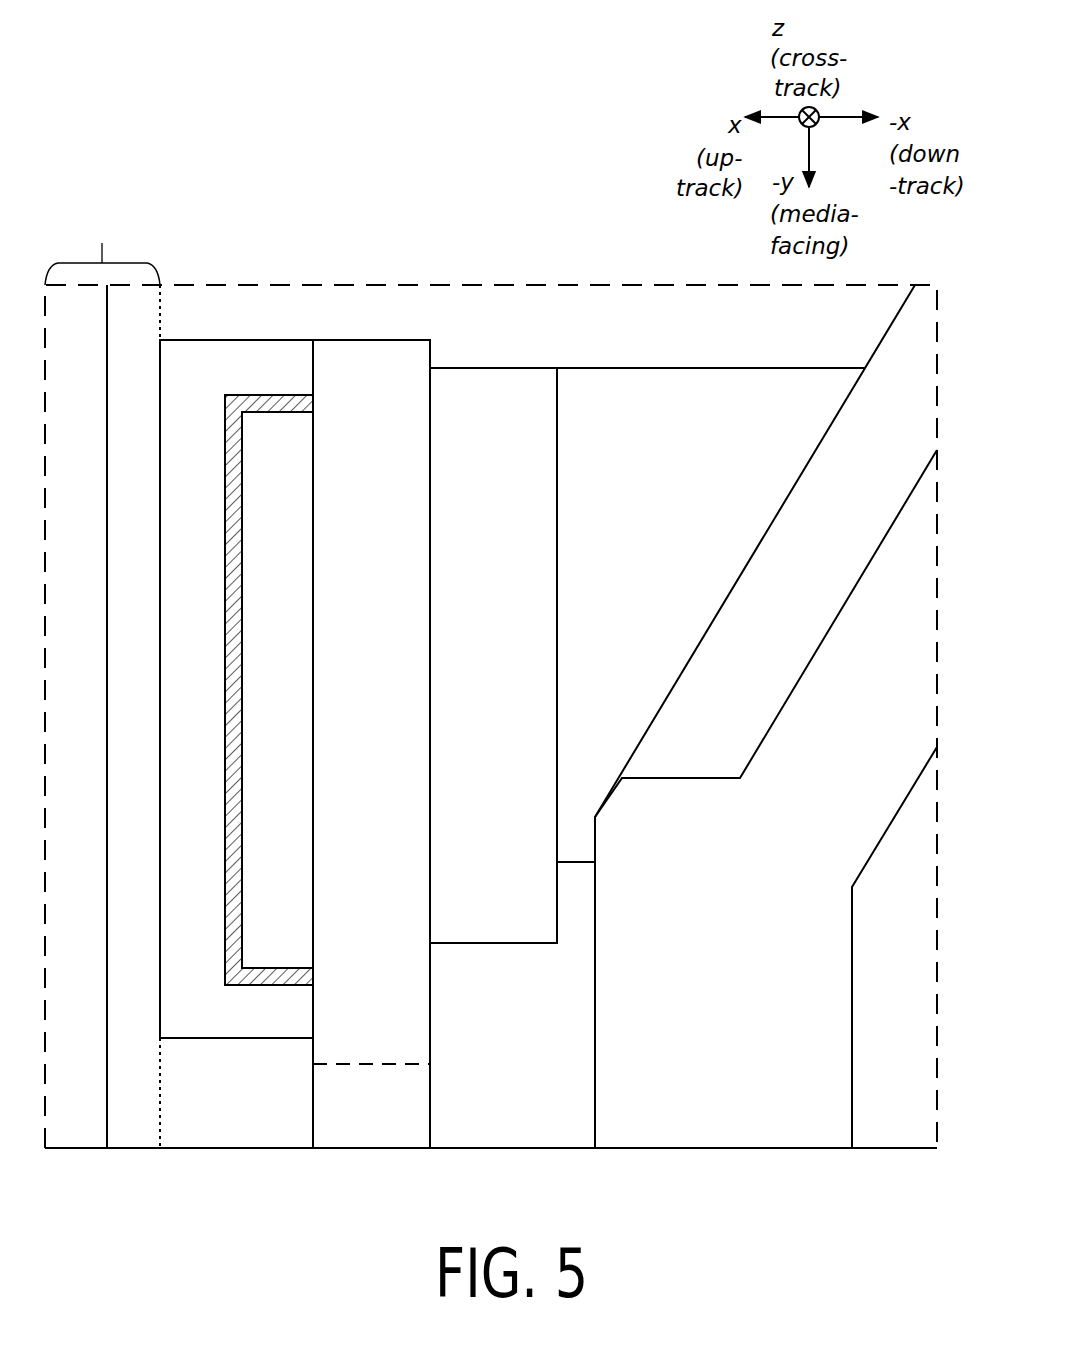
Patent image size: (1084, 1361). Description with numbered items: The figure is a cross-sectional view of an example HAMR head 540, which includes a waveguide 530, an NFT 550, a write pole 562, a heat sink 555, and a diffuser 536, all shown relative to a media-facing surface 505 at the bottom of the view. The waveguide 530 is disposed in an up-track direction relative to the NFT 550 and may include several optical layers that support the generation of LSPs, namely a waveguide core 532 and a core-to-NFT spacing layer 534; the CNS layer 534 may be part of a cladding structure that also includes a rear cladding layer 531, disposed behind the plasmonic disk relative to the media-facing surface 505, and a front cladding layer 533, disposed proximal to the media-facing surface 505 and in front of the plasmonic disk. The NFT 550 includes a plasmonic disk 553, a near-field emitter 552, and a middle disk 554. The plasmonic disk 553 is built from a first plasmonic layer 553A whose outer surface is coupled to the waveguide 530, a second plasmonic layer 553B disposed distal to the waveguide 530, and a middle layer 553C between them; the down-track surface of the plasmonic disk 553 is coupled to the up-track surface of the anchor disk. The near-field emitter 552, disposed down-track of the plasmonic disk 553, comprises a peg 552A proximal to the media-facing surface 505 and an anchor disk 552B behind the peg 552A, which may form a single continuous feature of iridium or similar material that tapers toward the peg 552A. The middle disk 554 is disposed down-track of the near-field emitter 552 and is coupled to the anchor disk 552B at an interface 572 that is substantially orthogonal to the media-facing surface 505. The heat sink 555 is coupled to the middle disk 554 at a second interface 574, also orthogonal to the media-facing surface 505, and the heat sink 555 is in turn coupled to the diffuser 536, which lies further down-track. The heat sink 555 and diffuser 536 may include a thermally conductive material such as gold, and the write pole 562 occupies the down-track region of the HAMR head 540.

The media-facing surface 505 is at (178, 1150).
The waveguide 530 is at (102, 678).
The rear cladding layer 531 is at (253, 330).
The waveguide core 532 is at (100, 735).
The front cladding layer 533 is at (260, 1110).
The core-to-NFT spacing layer 534 is at (159, 735).
The diffuser 536 is at (731, 750).
The HAMR head 540 is at (470, 138).
The near-field transducer 550 is at (463, 302).
The near-field emitter 552 is at (368, 325).
The peg 552A is at (404, 1122).
The anchor disk 552B is at (404, 660).
The plasmonic disk 553 is at (271, 325).
The first plasmonic layer 553A is at (238, 385).
The second plasmonic layer 553B is at (308, 709).
The middle layer 553C is at (243, 918).
The middle disk 554 is at (518, 659).
The heat sink 555 is at (681, 570).
The write pole 562 is at (746, 1035).
The interface 572 is at (430, 367).
The interface 574 is at (557, 367).